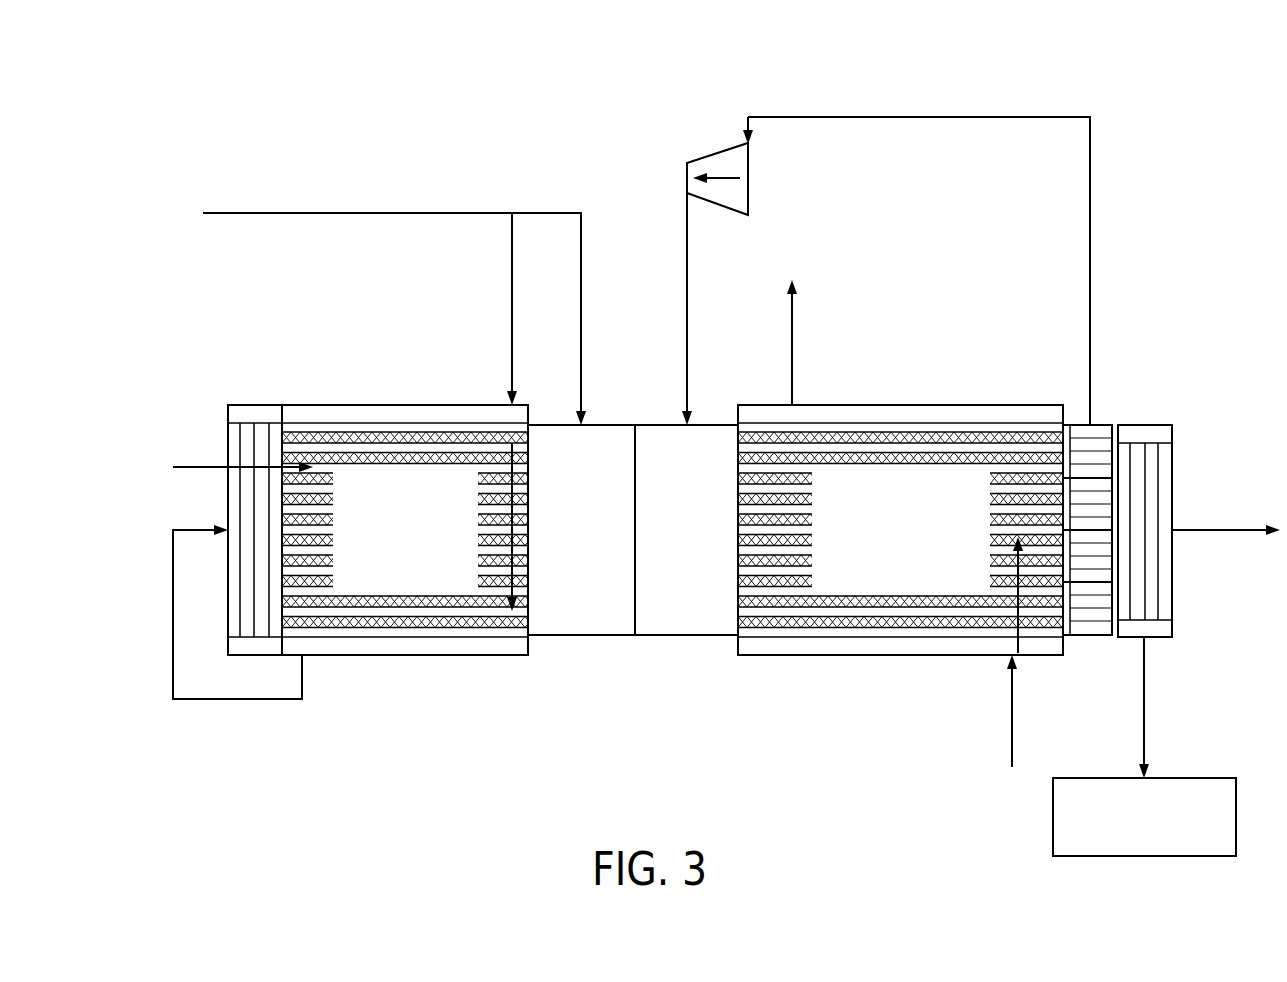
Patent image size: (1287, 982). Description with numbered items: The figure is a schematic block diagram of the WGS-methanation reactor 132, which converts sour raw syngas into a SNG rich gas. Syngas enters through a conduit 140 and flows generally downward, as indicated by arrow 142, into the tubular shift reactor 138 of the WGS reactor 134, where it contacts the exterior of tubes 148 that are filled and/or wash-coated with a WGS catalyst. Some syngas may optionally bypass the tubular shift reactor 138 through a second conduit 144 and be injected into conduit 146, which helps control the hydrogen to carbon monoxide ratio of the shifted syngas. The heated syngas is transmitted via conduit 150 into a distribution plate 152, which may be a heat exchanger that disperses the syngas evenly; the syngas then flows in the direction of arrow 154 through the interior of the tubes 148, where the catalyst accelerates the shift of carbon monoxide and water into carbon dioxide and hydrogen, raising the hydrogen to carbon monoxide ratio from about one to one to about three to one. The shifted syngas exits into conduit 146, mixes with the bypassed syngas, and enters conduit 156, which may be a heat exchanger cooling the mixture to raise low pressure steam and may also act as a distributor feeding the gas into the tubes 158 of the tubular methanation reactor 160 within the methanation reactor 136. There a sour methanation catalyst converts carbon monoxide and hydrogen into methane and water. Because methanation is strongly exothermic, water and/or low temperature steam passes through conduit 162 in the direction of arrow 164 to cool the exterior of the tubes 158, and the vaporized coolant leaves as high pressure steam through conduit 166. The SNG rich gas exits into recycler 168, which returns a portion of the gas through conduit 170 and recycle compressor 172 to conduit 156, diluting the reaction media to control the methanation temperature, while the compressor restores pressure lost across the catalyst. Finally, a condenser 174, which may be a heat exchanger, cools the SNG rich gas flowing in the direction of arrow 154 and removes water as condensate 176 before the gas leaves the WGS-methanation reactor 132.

The WGS-methanation reactor 132 is at (748, 48).
The WGS reactor 134 is at (370, 316).
The methanation reactor 136 is at (890, 270).
The tubular shift reactor 138 is at (453, 536).
The conduit 140 is at (514, 304).
The arrow 142 is at (525, 592).
The second conduit 144 is at (582, 258).
The conduit 146 is at (604, 425).
The tubes 148 is at (298, 583).
The conduit 150 is at (238, 699).
The distribution plate 152 is at (255, 405).
The arrow 154 is at (203, 463).
The conduit 156 is at (675, 638).
The tubes 158 is at (772, 583).
The tubular methanation reactor 160 is at (909, 534).
The conduit 162 is at (1013, 752).
The arrow 164 is at (1018, 645).
The conduit 166 is at (795, 338).
The recycler 168 is at (1102, 425).
The conduit 170 is at (1050, 117).
The recycle compressor 172 is at (751, 190).
The condenser 174 is at (1160, 432).
The condensate 176 is at (1210, 778).